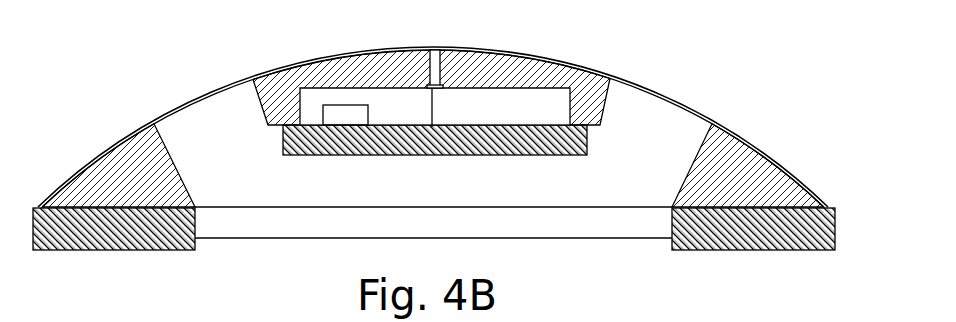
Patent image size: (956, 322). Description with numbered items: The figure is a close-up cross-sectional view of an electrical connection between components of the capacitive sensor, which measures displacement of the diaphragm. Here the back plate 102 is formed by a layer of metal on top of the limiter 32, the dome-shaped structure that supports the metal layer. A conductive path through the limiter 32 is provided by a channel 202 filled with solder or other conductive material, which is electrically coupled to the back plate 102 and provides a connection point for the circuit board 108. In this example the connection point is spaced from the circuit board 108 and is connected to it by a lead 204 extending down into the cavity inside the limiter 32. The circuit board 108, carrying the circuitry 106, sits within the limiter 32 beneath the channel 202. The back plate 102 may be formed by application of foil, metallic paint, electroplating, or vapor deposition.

The back plate 102 is at (511, 56).
The limiter 32 is at (157, 160).
The channel 202 is at (428, 63).
The lead 204 is at (434, 108).
The circuitry 106 is at (343, 116).
The circuit board 108 is at (362, 142).